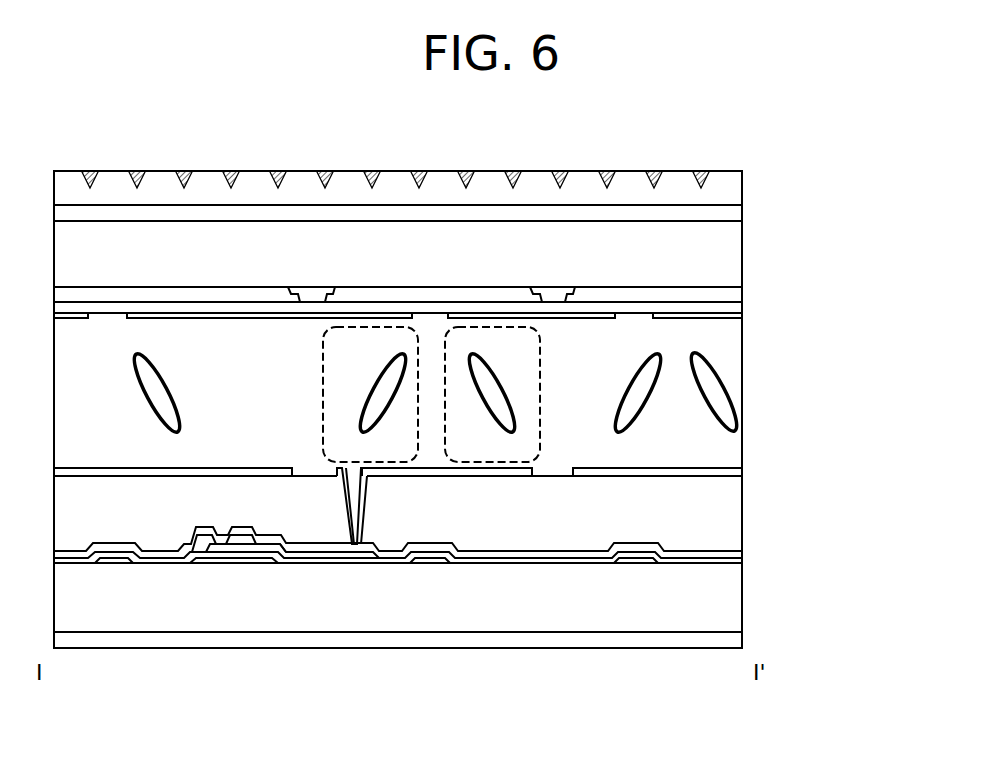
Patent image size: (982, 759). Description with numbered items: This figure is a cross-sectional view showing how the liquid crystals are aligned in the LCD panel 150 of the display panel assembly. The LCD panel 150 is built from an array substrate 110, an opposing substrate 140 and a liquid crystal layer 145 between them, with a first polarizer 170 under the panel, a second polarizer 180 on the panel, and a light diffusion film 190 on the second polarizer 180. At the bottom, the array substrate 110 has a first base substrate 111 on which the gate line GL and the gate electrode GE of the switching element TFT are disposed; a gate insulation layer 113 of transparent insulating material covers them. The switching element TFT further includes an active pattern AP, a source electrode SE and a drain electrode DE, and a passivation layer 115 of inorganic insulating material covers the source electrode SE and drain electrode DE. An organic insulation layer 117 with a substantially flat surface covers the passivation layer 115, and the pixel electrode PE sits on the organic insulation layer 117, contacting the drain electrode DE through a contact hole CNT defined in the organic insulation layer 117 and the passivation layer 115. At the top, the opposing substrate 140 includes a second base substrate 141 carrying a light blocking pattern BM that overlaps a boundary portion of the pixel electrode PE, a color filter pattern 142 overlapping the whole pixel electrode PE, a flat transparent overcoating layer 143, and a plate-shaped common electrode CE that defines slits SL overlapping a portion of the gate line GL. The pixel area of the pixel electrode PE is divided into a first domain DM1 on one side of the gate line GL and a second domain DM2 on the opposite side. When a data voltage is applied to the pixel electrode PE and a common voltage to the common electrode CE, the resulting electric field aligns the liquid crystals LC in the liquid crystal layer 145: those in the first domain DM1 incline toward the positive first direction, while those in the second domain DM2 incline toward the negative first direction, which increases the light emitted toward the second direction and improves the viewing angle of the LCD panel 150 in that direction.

The light diffusion film 190 is at (743, 183).
The second polarizer 180 is at (743, 210).
The second base substrate 141 is at (743, 243).
The light blocking pattern BM is at (553, 290).
The color filter pattern 142 is at (743, 300).
The overcoating layer 143 is at (743, 312).
The common electrode CE is at (743, 318).
The slits SL is at (628, 315).
The opposing substrate 140 is at (455, 303).
The liquid crystals LC is at (730, 398).
The first domain DM1 is at (323, 390).
The second domain DM2 is at (540, 391).
The liquid crystal layer 145 is at (743, 440).
The LCD panel 150 is at (483, 463).
The pixel electrode PE is at (743, 473).
The contact hole CNT is at (353, 546).
The organic insulation layer 117 is at (743, 513).
The passivation layer 115 is at (743, 549).
The gate insulation layer 113 is at (743, 558).
The first base substrate 111 is at (743, 597).
The array substrate 110 is at (456, 607).
The gate line GL is at (430, 562).
The switching element TFT is at (273, 646).
The gate electrode GE is at (253, 562).
The active pattern AP is at (220, 545).
The source electrode SE is at (195, 548).
The drain electrode DE is at (303, 553).
The first polarizer 170 is at (743, 637).